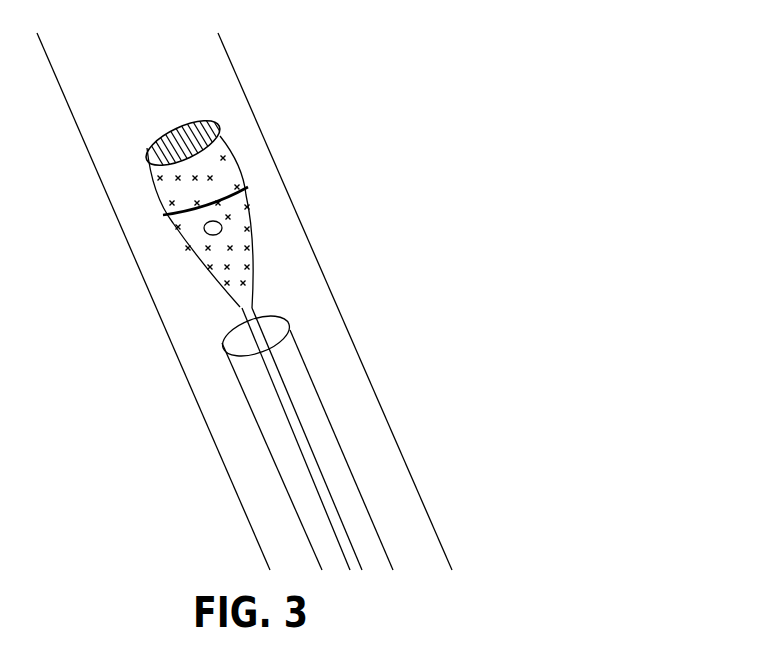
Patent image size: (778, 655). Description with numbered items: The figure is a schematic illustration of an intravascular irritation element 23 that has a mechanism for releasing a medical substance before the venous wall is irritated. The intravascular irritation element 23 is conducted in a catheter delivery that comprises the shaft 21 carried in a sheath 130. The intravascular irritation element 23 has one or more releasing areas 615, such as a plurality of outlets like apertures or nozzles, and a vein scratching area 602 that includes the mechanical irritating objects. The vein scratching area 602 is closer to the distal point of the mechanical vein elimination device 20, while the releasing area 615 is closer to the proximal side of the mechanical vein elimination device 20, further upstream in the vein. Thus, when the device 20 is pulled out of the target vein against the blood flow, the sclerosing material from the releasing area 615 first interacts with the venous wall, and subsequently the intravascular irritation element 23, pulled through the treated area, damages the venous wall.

The mechanical vein elimination device 20 is at (356, 262).
The shaft 21 is at (240, 312).
The intravascular irritation element 23 is at (184, 117).
The sheath 130 is at (290, 470).
The vein scratching area 602 is at (233, 157).
The releasing area 615 is at (254, 224).